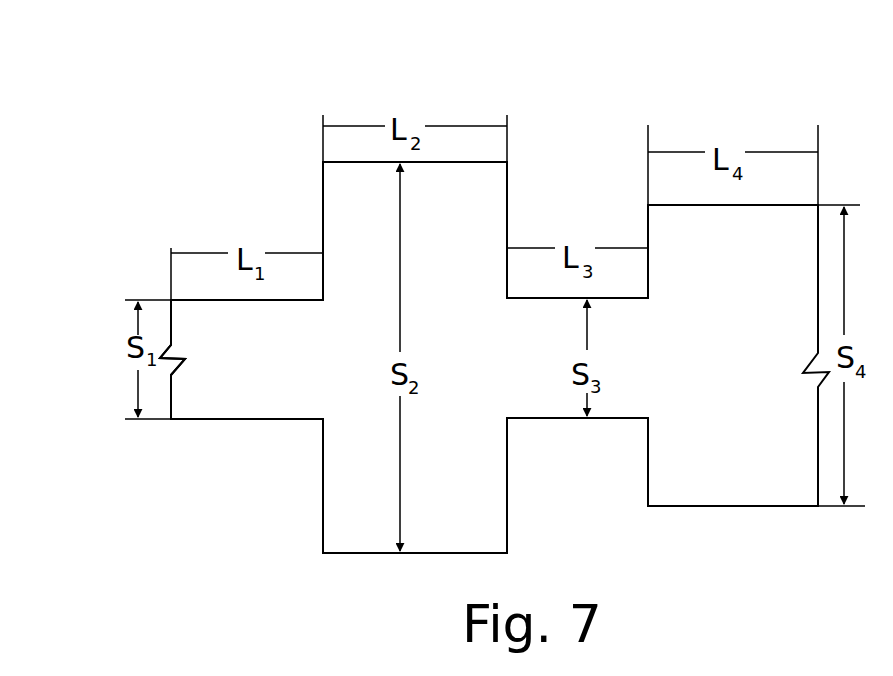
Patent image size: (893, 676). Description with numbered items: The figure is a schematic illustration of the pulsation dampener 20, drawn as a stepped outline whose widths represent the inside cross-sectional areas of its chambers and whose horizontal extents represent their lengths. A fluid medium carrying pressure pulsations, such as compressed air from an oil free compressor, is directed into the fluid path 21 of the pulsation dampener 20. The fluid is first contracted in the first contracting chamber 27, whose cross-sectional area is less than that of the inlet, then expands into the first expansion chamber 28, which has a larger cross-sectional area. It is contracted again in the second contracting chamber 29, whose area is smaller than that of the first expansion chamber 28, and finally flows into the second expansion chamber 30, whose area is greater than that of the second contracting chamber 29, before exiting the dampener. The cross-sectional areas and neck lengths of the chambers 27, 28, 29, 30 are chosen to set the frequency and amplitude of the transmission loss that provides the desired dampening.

The pulsation dampener 20 is at (645, 82).
The fluid path 21 is at (117, 368).
The first contracting chamber 27 is at (252, 379).
The first expansion chamber 28 is at (428, 495).
The second contracting chamber 29 is at (558, 398).
The second expansion chamber 30 is at (695, 470).